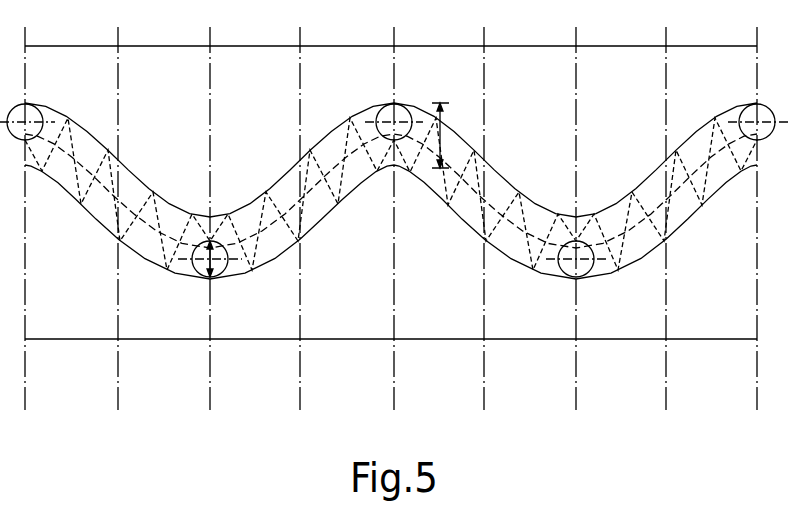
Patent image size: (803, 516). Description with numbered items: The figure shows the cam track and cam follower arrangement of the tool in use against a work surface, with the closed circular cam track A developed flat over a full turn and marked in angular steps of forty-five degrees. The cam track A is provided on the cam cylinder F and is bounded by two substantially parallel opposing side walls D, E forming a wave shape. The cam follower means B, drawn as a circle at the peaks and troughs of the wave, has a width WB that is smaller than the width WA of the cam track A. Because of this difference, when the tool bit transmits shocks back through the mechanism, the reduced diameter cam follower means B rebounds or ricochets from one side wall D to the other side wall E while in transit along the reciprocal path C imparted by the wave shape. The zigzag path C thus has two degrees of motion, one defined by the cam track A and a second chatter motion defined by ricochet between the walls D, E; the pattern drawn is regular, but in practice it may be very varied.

The cam track A is at (117, 167).
The cam follower means B is at (219, 271).
The path C is at (246, 266).
The side wall of cam track D is at (68, 121).
The side wall of cam track E is at (57, 186).
The cam cylinder F is at (616, 113).
The width of cam track WA is at (445, 135).
The width of cam follower means WB is at (203, 276).